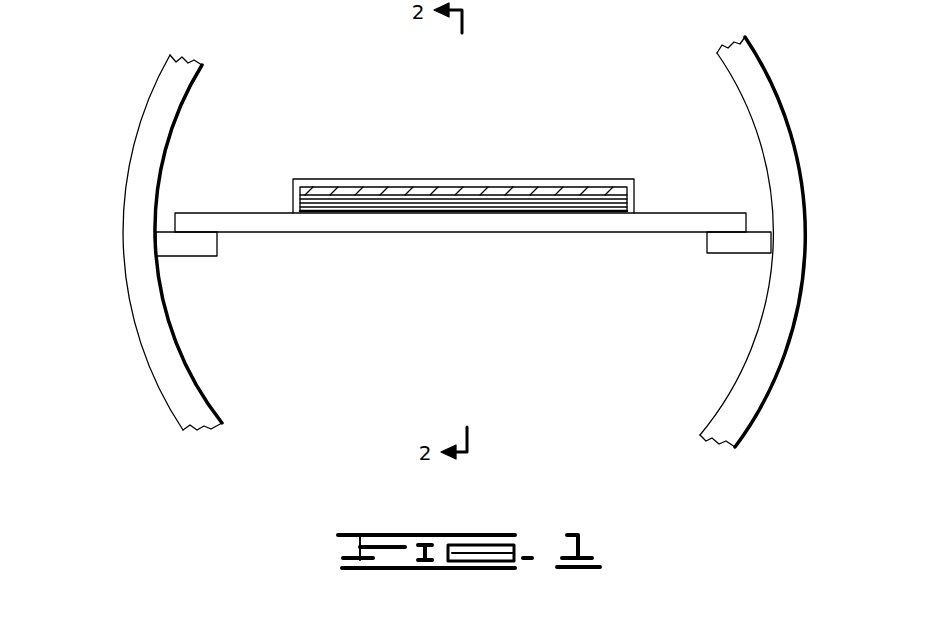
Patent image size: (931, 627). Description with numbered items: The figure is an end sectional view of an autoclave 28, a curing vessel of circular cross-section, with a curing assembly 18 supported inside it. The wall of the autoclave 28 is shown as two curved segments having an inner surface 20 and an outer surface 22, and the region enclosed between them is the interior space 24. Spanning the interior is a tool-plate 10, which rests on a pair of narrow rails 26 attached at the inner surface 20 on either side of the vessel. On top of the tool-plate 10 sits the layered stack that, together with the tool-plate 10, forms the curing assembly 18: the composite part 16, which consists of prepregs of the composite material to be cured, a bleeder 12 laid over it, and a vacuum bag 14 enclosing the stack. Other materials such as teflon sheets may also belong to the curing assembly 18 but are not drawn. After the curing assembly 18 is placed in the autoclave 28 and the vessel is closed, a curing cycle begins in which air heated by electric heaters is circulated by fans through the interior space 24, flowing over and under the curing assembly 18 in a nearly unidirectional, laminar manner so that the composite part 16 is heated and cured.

The tool-plate 10 is at (276, 213).
The bleeder 12 is at (393, 187).
The vacuum bag 14 is at (485, 178).
The composite part 16 is at (357, 202).
The curing assembly 18 is at (358, 140).
The inner surface 20 is at (176, 128).
The outer surface 22 is at (125, 192).
The interior space 24 is at (545, 84).
The narrow rails 26 is at (188, 260).
The autoclave 28 is at (120, 106).